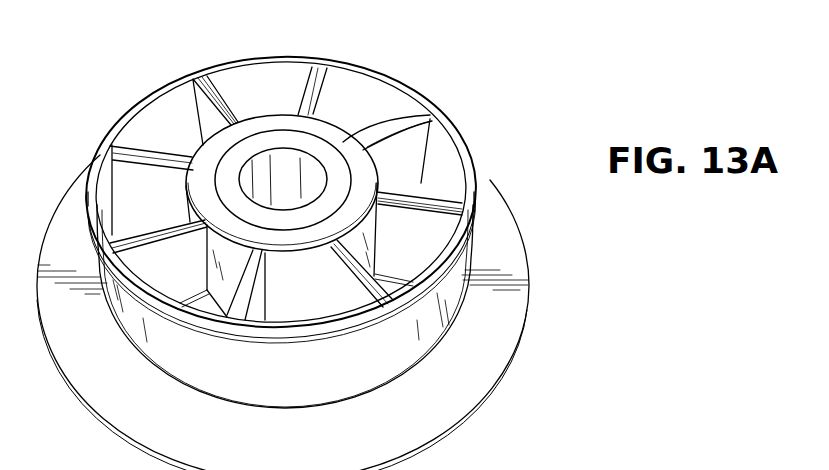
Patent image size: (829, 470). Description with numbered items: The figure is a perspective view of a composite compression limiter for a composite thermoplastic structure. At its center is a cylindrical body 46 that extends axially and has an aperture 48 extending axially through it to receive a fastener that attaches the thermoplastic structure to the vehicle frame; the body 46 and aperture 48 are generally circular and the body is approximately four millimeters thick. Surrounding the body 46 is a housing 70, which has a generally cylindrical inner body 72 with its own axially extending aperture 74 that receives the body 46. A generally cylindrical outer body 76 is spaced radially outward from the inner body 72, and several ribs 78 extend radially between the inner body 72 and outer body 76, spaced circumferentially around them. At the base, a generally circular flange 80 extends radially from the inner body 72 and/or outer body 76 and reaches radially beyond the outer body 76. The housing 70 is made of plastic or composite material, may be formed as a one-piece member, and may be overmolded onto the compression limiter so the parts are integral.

The cylindrical body 46 is at (310, 147).
The aperture 48 is at (289, 151).
The housing 70 is at (458, 136).
The inner body 72 is at (343, 140).
The aperture 74 is at (348, 167).
The outer body 76 is at (470, 217).
The ribs 78 is at (385, 290).
The flange 80 is at (423, 408).